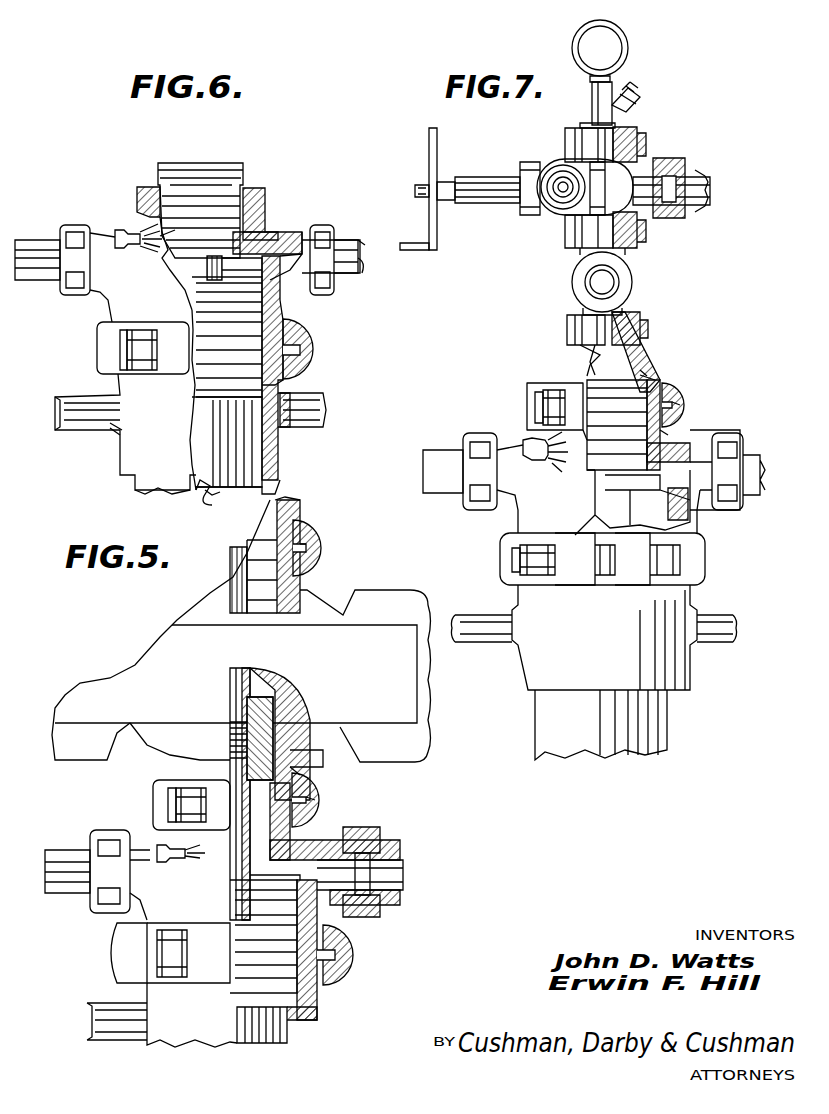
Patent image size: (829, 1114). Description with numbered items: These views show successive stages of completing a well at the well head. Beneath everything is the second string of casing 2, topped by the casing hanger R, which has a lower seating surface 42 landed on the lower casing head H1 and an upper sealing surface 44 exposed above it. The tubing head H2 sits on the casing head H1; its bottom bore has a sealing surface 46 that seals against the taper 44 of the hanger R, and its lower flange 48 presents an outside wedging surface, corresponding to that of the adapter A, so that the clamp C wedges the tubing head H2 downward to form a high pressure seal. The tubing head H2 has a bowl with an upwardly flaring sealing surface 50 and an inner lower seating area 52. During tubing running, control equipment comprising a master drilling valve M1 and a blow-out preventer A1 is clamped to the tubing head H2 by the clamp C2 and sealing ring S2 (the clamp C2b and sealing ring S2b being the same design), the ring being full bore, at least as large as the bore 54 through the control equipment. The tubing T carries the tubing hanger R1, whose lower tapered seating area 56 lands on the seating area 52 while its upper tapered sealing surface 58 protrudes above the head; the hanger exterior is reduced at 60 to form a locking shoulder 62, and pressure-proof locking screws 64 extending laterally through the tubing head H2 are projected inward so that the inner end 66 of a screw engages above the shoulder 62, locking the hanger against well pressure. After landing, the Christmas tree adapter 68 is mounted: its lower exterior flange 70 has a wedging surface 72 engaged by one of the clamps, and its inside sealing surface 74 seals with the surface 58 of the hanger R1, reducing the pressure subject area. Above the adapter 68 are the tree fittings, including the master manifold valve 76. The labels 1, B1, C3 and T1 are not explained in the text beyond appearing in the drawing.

In FIG. 6, the well casing head 1 is at (270, 478).
In FIG. 6, the second string of casing 2 is at (210, 488).
In FIG. 5, the second string of casing 2 is at (282, 1043).
In FIG. 7, the second string of casing 2 is at (668, 736).
In FIG. 6, the lower seating surface 42 is at (205, 380).
In FIG. 6, the upper sealing surface 44 is at (250, 325).
In FIG. 6, the sealing surface 46 is at (282, 318).
In FIG. 6, the lower flange 48 is at (305, 342).
In FIG. 6, the sealing surface 50 is at (262, 196).
In FIG. 5, the sealing surface 50 is at (305, 813).
In FIG. 6, the seating area 52 is at (252, 212).
In FIG. 5, the seating area 52 is at (255, 845).
In FIG. 7, the seating area 52 is at (675, 425).
In FIG. 5, the bore 54 is at (312, 756).
In FIG. 6, the lower tapered seating area 56 is at (200, 205).
In FIG. 5, the lower tapered seating area 56 is at (232, 725).
In FIG. 6, the upper tapered sealing surface 58 is at (243, 172).
In FIG. 5, the reduced portion 60 is at (232, 742).
In FIG. 6, the locking shoulder 62 is at (205, 262).
In FIG. 5, the locking shoulder 62 is at (232, 760).
In FIG. 6, the locking screws 64 is at (122, 230).
In FIG. 5, the locking screws 64 is at (165, 858).
In FIG. 6, the inner end of locking screw 66 is at (262, 250).
In FIG. 7, the adapter 68 is at (632, 355).
In FIG. 7, the lower exterior flange 70 is at (680, 392).
In FIG. 7, the wedging surface 72 is at (660, 372).
In FIG. 7, the sealing surface 74 is at (660, 360).
In FIG. 7, the master manifold valve 76 is at (632, 283).
In FIG. 5, the adapter A is at (302, 771).
In FIG. 5, the blow-out preventer A1 is at (290, 498).
In FIG. 5, the part B1 is at (300, 516).
In FIG. 6, the clamp C is at (306, 362).
In FIG. 5, the clamp C is at (125, 957).
In FIG. 5, the clamp C2 is at (318, 548).
In FIG. 5, the clamp C2b is at (320, 800).
In FIG. 7, the cap C3 is at (685, 410).
In FIG. 6, the casing head H1 is at (125, 450).
In FIG. 5, the casing head H1 is at (185, 1043).
In FIG. 7, the casing head H1 is at (680, 680).
In FIG. 6, the tubing head H2 is at (300, 268).
In FIG. 5, the tubing head H2 is at (345, 840).
In FIG. 7, the tubing head H2 is at (700, 448).
In FIG. 5, the master drilling valve M1 is at (405, 715).
In FIG. 6, the casing hanger R is at (204, 354).
In FIG. 5, the casing hanger R is at (274, 916).
In FIG. 6, the tubing hanger R1 is at (165, 180).
In FIG. 5, the tubing hanger R1 is at (298, 705).
In FIG. 7, the tubing hanger R1 is at (605, 402).
In FIG. 5, the sealing ring S2 is at (262, 556).
In FIG. 5, the sealing ring S2b is at (310, 790).
In FIG. 6, the tubing T is at (143, 335).
In FIG. 5, the tubing T is at (252, 690).
In FIG. 5, the nut T' T1 is at (215, 828).